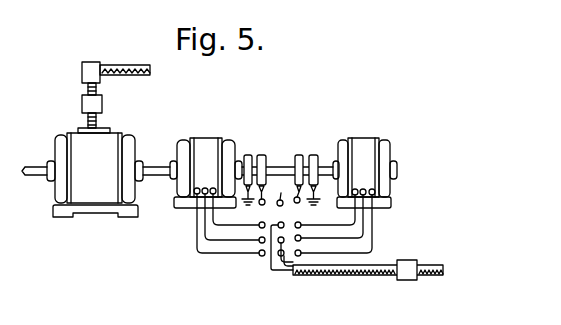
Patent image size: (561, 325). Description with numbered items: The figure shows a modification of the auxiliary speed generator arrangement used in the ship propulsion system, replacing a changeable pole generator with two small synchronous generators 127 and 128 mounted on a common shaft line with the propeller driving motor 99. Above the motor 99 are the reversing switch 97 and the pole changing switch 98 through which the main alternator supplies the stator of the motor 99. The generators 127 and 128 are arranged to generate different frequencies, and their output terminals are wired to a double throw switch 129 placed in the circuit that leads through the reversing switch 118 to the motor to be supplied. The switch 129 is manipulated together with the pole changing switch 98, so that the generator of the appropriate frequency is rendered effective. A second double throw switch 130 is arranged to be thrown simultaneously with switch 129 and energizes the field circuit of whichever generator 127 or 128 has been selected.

The reversing switch 97 is at (93, 72).
The pole changing switch 98 is at (82, 100).
The motor 99 is at (95, 165).
The synchronous generator 127 is at (204, 158).
The synchronous generator 128 is at (363, 155).
The double throw switch 129 is at (283, 244).
The double throw switch 130 is at (277, 205).
The reversing switch 118 is at (405, 266).